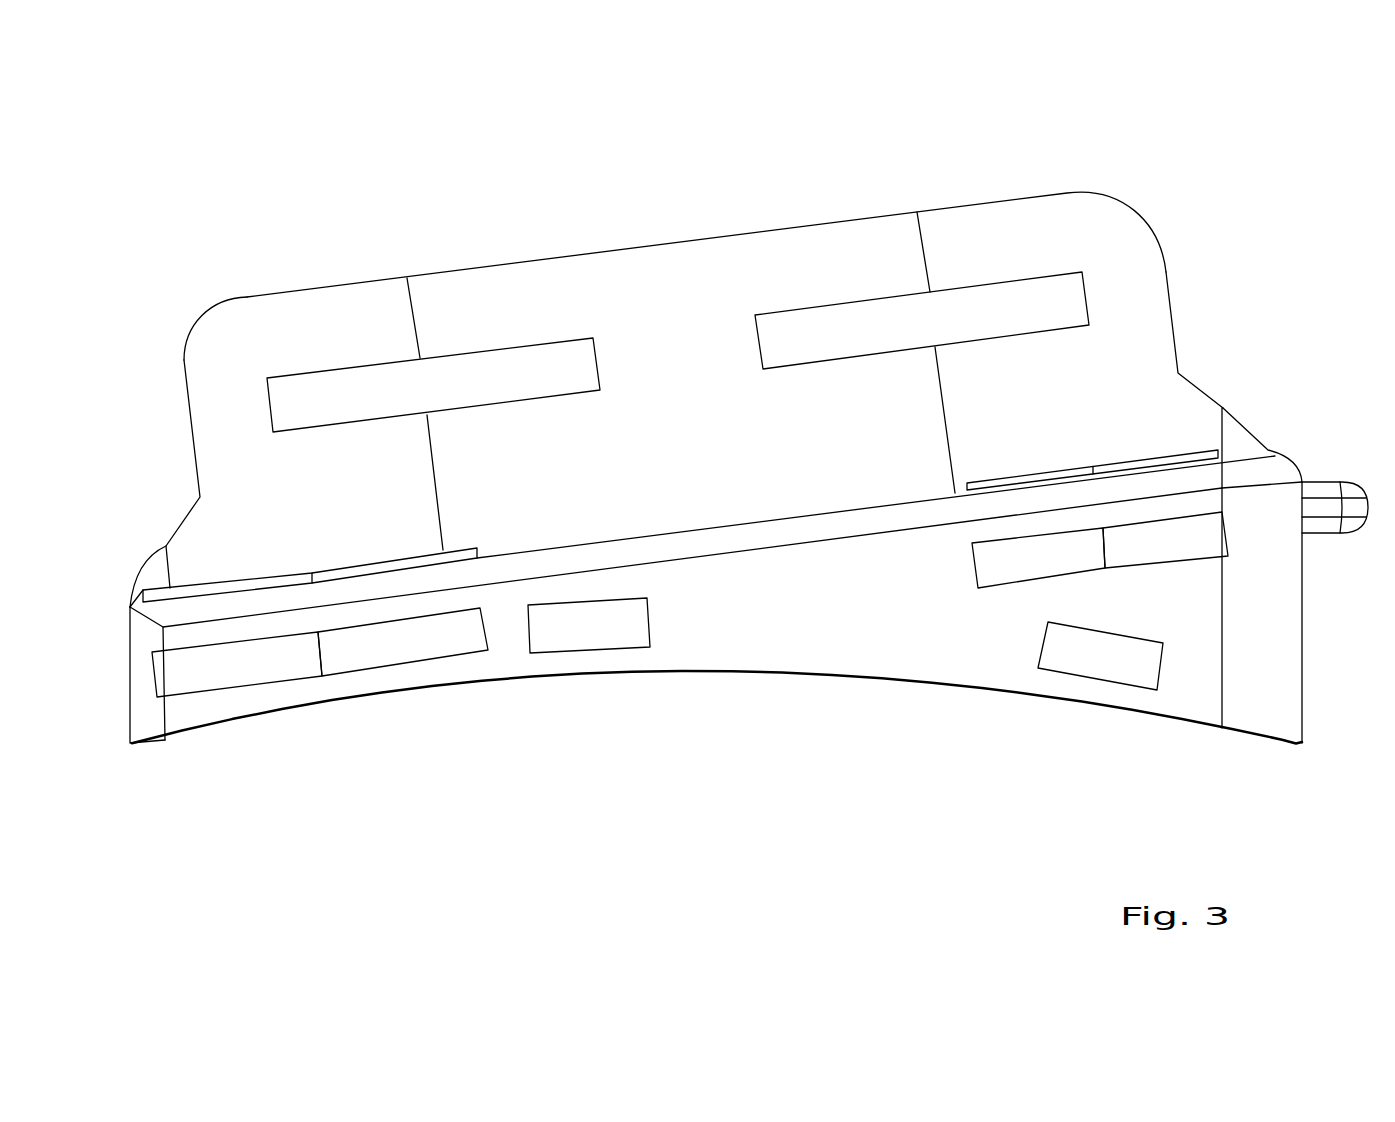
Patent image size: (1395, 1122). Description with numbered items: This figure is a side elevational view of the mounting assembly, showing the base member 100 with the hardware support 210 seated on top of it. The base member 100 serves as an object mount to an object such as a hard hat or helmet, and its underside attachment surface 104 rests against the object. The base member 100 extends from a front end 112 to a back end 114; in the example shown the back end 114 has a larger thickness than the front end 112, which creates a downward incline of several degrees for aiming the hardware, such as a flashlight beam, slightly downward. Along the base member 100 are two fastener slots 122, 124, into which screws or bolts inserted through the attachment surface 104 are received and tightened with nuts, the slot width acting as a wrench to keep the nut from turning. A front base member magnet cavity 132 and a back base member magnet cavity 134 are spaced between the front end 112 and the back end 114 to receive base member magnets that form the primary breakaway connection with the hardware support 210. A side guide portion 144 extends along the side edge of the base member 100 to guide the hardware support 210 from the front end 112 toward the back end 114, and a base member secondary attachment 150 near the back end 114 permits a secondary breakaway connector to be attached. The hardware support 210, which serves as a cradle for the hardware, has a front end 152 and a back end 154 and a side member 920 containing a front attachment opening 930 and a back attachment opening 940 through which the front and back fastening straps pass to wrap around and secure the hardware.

The base member 100 is at (342, 826).
The attachment surface 104 is at (710, 673).
The front end 112 is at (113, 683).
The back end 114 is at (1313, 672).
The fastener slot 122 is at (605, 613).
The fastener slot 124 is at (1115, 642).
The front base member magnet cavity 132 is at (310, 638).
The back base member magnet cavity 134 is at (1020, 563).
The side guide portion 144 is at (768, 532).
The base member secondary attachment 150 is at (1332, 478).
The front end 152 is at (135, 492).
The back end 154 is at (1240, 277).
The hardware support 210 is at (322, 57).
The side member 920 is at (1095, 227).
The front attachment opening 930 is at (393, 387).
The back attachment opening 940 is at (917, 327).